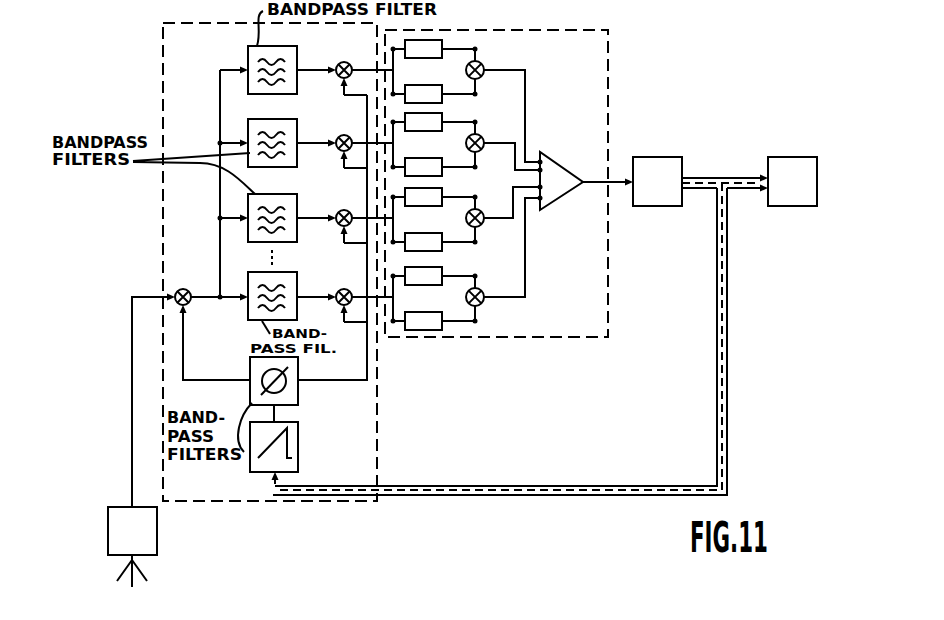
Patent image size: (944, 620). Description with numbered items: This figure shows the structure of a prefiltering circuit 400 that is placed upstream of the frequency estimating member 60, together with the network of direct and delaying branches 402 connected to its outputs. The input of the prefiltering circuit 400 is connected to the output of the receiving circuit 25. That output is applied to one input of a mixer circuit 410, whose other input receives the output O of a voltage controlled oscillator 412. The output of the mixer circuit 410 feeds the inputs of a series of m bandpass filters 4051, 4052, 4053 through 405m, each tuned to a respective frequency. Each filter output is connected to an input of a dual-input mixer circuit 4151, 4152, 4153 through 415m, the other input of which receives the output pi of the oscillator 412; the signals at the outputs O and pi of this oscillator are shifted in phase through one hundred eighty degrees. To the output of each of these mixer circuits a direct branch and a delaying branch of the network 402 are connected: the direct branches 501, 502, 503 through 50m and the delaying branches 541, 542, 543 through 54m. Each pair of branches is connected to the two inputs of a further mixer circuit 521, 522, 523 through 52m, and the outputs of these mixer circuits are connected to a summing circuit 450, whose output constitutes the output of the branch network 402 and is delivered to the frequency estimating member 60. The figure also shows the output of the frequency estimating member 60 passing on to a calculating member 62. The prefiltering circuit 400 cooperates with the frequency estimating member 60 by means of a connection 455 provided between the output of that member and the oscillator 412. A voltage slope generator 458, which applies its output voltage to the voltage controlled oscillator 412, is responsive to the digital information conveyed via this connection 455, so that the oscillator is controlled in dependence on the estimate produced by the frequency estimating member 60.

The receiving circuit 25 is at (143, 540).
The prefiltering circuit 400 is at (259, 490).
The network of direct and delaying branches 402 is at (557, 337).
The bandpass filter 4051 is at (248, 57).
The bandpass filter 4052 is at (248, 128).
The bandpass filter 4053 is at (252, 200).
The bandpass filter 405m is at (266, 320).
The mixer circuit 410 is at (187, 289).
The voltage controlled oscillator 412 is at (297, 390).
The mixer circuit 4151 is at (344, 62).
The mixer circuit 4152 is at (346, 135).
The mixer circuit 4153 is at (346, 210).
The mixer circuit 415m is at (346, 289).
The summing circuit 450 is at (562, 196).
The connection 455 is at (573, 486).
The voltage slope generator 458 is at (298, 438).
The direct branch 501 is at (442, 100).
The direct branch 502 is at (440, 176).
The direct branch 503 is at (431, 251).
The direct branch 50m is at (412, 330).
The mixer circuit 521 is at (482, 64).
The mixer circuit 522 is at (479, 151).
The mixer circuit 523 is at (480, 224).
The mixer circuit 52m is at (480, 304).
The delaying branch 541 is at (433, 64).
The delaying branch 542 is at (433, 130).
The delaying branch 543 is at (433, 207).
The delaying branch 54m is at (438, 285).
The frequency estimating member 60 is at (661, 195).
The calculating member 62 is at (786, 207).